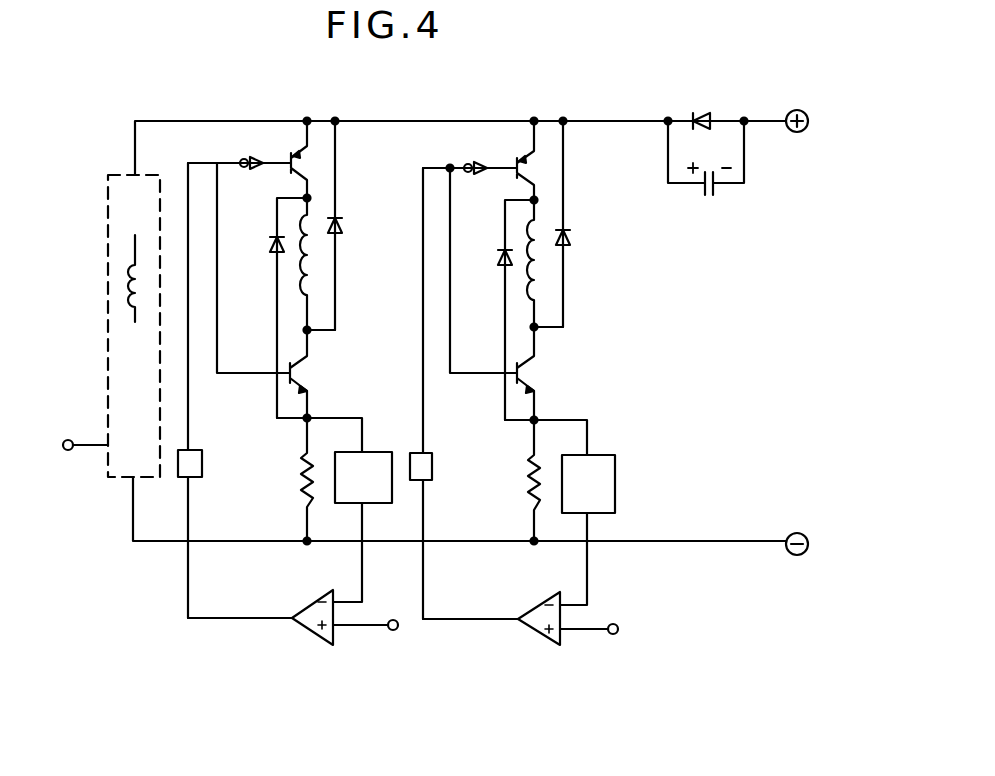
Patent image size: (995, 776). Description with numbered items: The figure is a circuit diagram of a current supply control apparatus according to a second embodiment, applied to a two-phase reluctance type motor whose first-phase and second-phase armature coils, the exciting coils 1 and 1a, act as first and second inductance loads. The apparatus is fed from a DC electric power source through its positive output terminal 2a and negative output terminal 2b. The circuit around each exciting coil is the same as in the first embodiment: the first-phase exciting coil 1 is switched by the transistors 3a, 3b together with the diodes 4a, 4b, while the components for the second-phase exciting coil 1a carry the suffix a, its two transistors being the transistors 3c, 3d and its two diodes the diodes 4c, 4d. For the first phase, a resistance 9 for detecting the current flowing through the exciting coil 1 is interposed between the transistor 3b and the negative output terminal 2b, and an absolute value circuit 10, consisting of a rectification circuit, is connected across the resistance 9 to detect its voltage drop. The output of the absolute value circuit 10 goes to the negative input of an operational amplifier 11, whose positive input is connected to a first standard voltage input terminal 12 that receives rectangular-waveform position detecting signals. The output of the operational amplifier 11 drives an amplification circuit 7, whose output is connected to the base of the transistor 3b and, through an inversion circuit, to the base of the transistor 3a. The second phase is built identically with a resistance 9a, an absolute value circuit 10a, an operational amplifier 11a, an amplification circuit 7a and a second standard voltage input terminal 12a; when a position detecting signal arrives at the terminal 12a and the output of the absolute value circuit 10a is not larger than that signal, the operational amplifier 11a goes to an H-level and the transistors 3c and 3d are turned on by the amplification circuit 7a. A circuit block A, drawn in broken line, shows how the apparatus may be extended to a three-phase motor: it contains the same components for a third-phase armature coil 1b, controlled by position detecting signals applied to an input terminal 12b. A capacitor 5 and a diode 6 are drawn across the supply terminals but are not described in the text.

The first-phase exciting coil 1 is at (540, 270).
The second-phase exciting coil 1a is at (312, 272).
The third-phase armature coil 1b is at (140, 286).
The positive output terminal 2a is at (806, 129).
The negative output terminal 2b is at (797, 556).
The transistor 3a is at (527, 152).
The transistor 3b is at (528, 376).
The transistor 3c is at (297, 150).
The transistor 3d is at (302, 376).
The diode 4a is at (572, 236).
The diode 4b is at (498, 250).
The diode 4c is at (342, 228).
The diode 4d is at (270, 250).
The capacitor 5 is at (708, 197).
The diode 6 is at (702, 117).
The amplification circuit 7 is at (435, 463).
The amplification circuit 7a is at (205, 463).
The resistance 9 is at (527, 485).
The resistance 9a is at (300, 485).
The absolute value circuit 10 is at (618, 465).
The absolute value circuit 10a is at (365, 505).
The operational amplifier 11 is at (540, 636).
The operational amplifier 11a is at (321, 636).
The first standard voltage input terminal 12 is at (614, 635).
The second standard voltage input terminal 12a is at (394, 631).
The input terminal 12b is at (66, 451).
The circuit block A is at (104, 308).